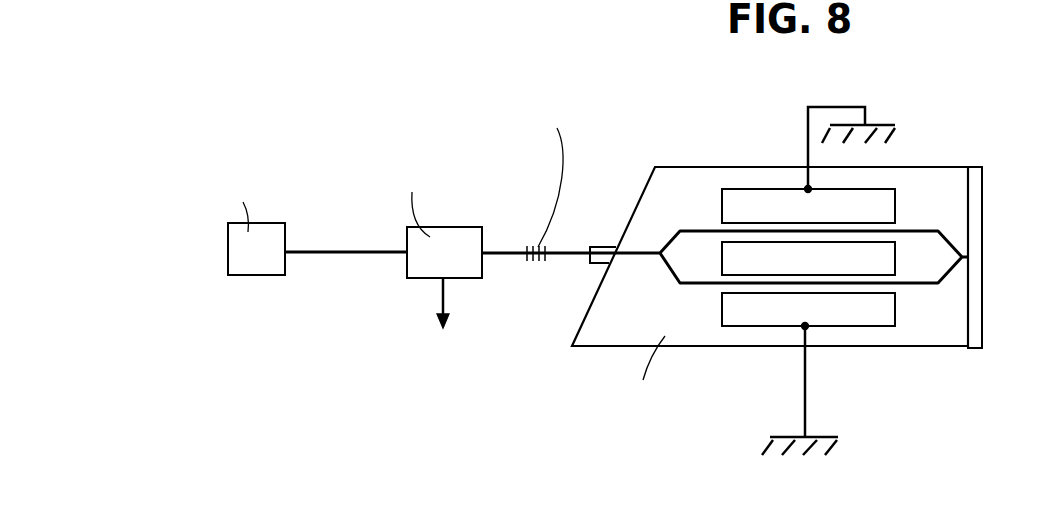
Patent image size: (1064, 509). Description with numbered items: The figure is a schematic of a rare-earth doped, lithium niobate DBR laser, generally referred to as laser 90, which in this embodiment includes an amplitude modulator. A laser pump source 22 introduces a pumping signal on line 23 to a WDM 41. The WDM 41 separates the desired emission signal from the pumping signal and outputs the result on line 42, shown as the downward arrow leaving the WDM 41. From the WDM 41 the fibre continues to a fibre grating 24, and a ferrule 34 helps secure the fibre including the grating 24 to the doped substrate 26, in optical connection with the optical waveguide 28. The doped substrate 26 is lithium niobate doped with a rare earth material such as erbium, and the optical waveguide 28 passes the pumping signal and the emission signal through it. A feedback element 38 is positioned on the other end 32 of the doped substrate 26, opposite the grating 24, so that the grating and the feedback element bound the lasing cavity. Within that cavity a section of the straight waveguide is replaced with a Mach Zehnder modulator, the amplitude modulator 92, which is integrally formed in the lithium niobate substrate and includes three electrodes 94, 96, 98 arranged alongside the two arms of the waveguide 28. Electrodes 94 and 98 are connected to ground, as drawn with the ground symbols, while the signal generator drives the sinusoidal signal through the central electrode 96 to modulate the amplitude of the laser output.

The laser 90 is at (338, 165).
The laser pump source 22 is at (258, 276).
The line 23 is at (338, 248).
The WDM 41 is at (458, 227).
The line 42 is at (438, 295).
The fibre grating 24 is at (543, 263).
The ferrule 34 is at (605, 243).
The doped substrate 26 is at (685, 183).
The optical waveguide 28 is at (638, 260).
The amplitude modulator 92 is at (935, 192).
The electrode 94 is at (762, 187).
The electrode 96 is at (722, 265).
The electrode 98 is at (895, 320).
The other end 32 is at (985, 232).
The feedback element 38 is at (978, 348).